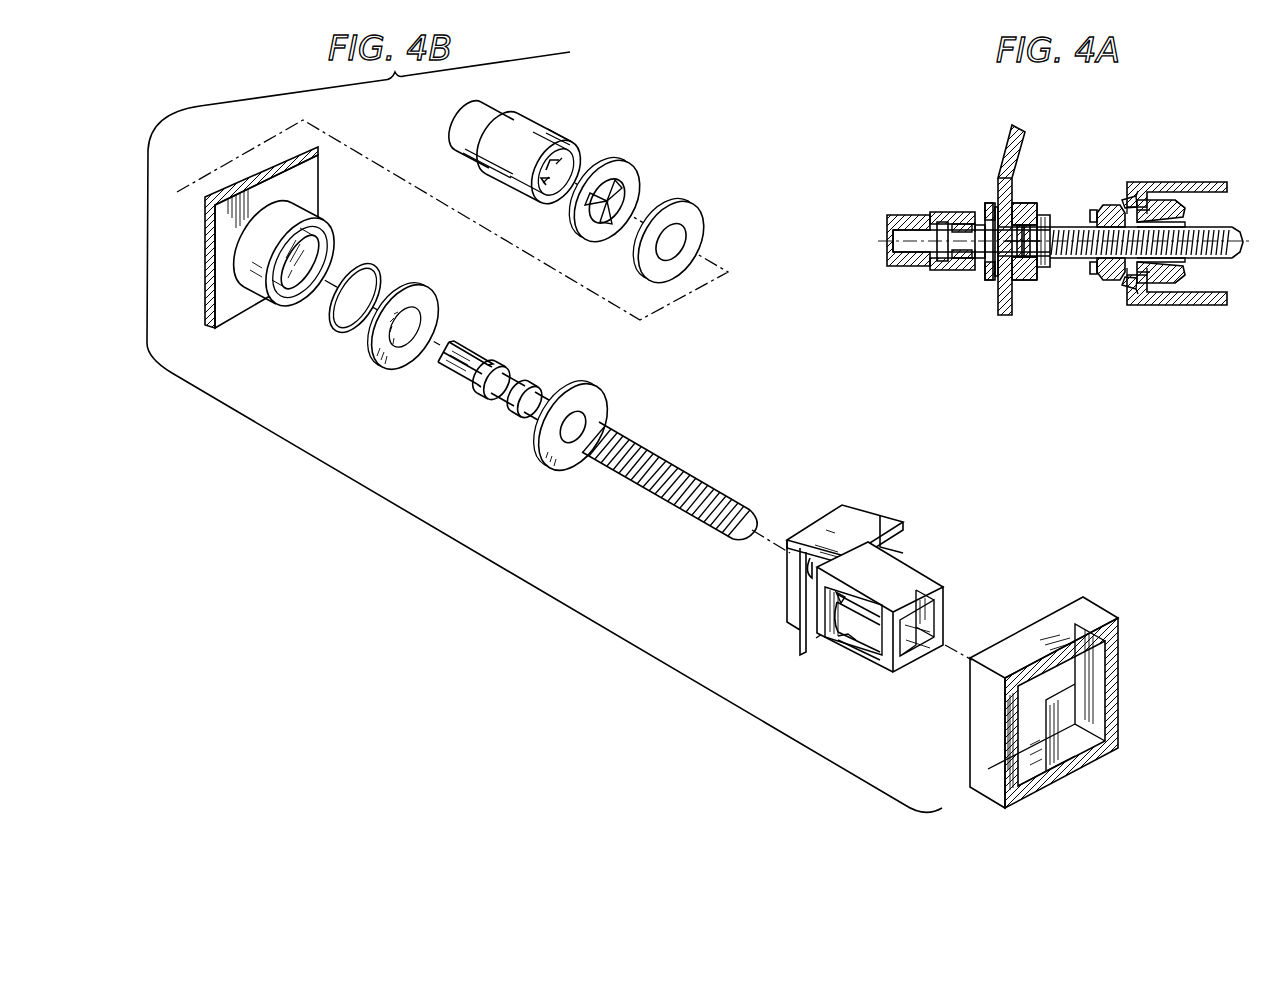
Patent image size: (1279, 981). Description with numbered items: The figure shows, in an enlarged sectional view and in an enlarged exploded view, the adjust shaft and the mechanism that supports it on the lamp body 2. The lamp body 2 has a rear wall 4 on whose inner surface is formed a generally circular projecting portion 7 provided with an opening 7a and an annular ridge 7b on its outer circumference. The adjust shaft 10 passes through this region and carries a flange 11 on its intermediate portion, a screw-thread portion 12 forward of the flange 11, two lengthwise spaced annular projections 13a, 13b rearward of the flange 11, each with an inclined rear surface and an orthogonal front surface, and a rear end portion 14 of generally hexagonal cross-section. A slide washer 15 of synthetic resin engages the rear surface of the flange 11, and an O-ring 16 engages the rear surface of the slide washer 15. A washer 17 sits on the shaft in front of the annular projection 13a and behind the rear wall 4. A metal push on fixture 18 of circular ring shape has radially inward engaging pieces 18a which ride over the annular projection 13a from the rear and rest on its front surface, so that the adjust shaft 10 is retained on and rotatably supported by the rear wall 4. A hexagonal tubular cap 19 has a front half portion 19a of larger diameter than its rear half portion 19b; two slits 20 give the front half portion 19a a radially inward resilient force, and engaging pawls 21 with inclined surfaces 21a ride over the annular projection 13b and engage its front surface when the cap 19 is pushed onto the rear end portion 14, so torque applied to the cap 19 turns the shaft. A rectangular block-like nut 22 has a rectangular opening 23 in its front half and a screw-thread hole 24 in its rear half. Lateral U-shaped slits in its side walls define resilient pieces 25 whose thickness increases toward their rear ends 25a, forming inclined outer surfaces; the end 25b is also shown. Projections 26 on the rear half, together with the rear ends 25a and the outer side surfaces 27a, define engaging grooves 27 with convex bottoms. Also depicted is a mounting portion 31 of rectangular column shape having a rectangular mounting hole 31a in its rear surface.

In FIG. 4B, the lamp body 2 is at (215, 332).
In FIG. 4A, the lamp body 2 is at (1008, 152).
In FIG. 4B, the rear wall 4 is at (232, 312).
In FIG. 4A, the rear wall 4 is at (1016, 170).
In FIG. 4B, the projecting portion 7 is at (307, 267).
In FIG. 4A, the projecting portion 7 is at (1038, 213).
In FIG. 4B, the opening 7a is at (294, 275).
In FIG. 4A, the opening 7a is at (1022, 203).
In FIG. 4B, the annular ridge 7b is at (328, 234).
In FIG. 4A, the annular ridge 7b is at (1036, 206).
In FIG. 4B, the adjust shaft 10 is at (652, 450).
In FIG. 4A, the adjust shaft 10 is at (1064, 260).
In FIG. 4B, the flange 11 is at (592, 394).
In FIG. 4A, the flange 11 is at (1042, 269).
In FIG. 4B, the screw-thread portion 12 is at (684, 468).
In FIG. 4A, the screw-thread portion 12 is at (1080, 260).
In FIG. 4B, the annular projection 13a is at (530, 388).
In FIG. 4A, the annular projection 13a is at (980, 258).
In FIG. 4B, the annular projection 13b is at (498, 366).
In FIG. 4A, the annular projection 13b is at (940, 223).
In FIG. 4B, the rear end portion 14 is at (440, 362).
In FIG. 4A, the rear end portion 14 is at (898, 243).
In FIG. 4B, the slide washer 15 is at (430, 302).
In FIG. 4A, the slide washer 15 is at (1027, 282).
In FIG. 4B, the O-ring 16 is at (372, 272).
In FIG. 4A, the O-ring 16 is at (1019, 282).
In FIG. 4B, the washer 17 is at (699, 217).
In FIG. 4A, the washer 17 is at (996, 280).
In FIG. 4B, the push on fixture 18 is at (629, 217).
In FIG. 4A, the push on fixture 18 is at (952, 273).
In FIG. 4B, the engaging piece 18a is at (625, 194).
In FIG. 4A, the engaging piece 18a is at (988, 268).
In FIG. 4B, the cap 19 is at (528, 161).
In FIG. 4A, the cap 19 is at (904, 204).
In FIG. 4B, the front half portion 19a is at (543, 122).
In FIG. 4A, the front half portion 19a is at (948, 212).
In FIG. 4B, the rear half portion 19b is at (466, 152).
In FIG. 4A, the rear half portion 19b is at (905, 215).
In FIG. 4B, the slit 20 is at (515, 172).
In FIG. 4B, the engaging pawl 21 is at (573, 148).
In FIG. 4A, the engaging pawl 21 is at (963, 224).
In FIG. 4B, the inclined surface 21a is at (581, 153).
In FIG. 4A, the inclined surface 21a is at (974, 222).
In FIG. 4B, the nut 22 is at (854, 583).
In FIG. 4A, the nut 22 is at (1114, 230).
In FIG. 4B, the rectangular opening 23 is at (906, 633).
In FIG. 4A, the rectangular opening 23 is at (1182, 228).
In FIG. 4A, the screw-thread hole 24 is at (1096, 226).
In FIG. 4B, the resilient piece 25 is at (845, 636).
In FIG. 4A, the resilient piece 25 is at (1194, 199).
In FIG. 4B, the rear end 25a is at (843, 600).
In FIG. 4A, the rear end 25a is at (1152, 206).
In FIG. 4B, the end of latch arm 25b is at (860, 648).
In FIG. 4A, the end of latch arm 25b is at (1182, 206).
In FIG. 4B, the projection 26 is at (905, 531).
In FIG. 4A, the projection 26 is at (1100, 208).
In FIG. 4B, the engaging groove 27 is at (811, 562).
In FIG. 4A, the engaging groove 27 is at (1128, 198).
In FIG. 4B, the outer side surface 27a is at (820, 632).
In FIG. 4A, the outer side surface 27a is at (1137, 192).
In FIG. 4B, the mounting portion 31 is at (1078, 676).
In FIG. 4A, the mounting portion 31 is at (1172, 274).
In FIG. 4B, the mounting hole 31a is at (1062, 688).
In FIG. 4A, the mounting hole 31a is at (1134, 282).